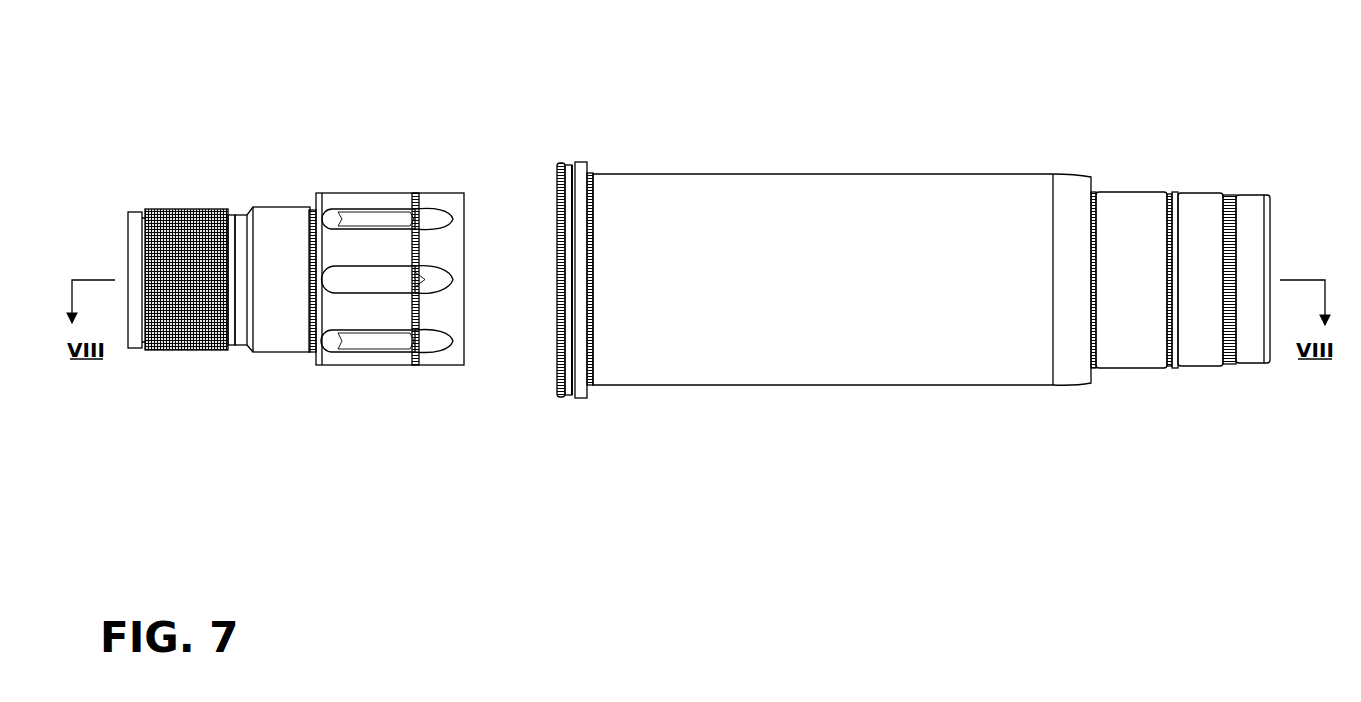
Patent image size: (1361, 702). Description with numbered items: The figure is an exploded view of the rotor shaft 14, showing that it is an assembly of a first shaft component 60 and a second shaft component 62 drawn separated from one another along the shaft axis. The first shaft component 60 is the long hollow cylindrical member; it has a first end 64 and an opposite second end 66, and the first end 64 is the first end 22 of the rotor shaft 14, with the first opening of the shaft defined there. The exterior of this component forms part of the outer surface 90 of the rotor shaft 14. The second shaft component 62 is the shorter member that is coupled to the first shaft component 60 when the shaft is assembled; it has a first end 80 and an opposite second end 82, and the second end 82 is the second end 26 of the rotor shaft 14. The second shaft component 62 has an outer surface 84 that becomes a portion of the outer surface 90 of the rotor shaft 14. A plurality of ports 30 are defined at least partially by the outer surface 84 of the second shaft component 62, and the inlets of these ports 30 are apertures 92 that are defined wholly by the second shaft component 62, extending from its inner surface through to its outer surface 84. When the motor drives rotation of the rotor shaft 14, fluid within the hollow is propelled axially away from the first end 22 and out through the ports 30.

The rotor shaft 14 is at (718, 152).
The first end of the rotor shaft 22 is at (1272, 213).
The second end of the rotor shaft 26 is at (128, 218).
The ports 30 is at (445, 215).
The first shaft component 60 is at (826, 212).
The second shaft component 62 is at (252, 207).
The first end of the first shaft component 64 is at (1272, 265).
The second end of the first shaft component 66 is at (558, 170).
The first end of the second shaft component 80 is at (465, 332).
The second end of the second shaft component 82 is at (128, 323).
The outer surface of the second shaft component 84 is at (281, 345).
The outer surface of the rotor shaft 90 is at (750, 368).
The apertures 92 is at (387, 280).